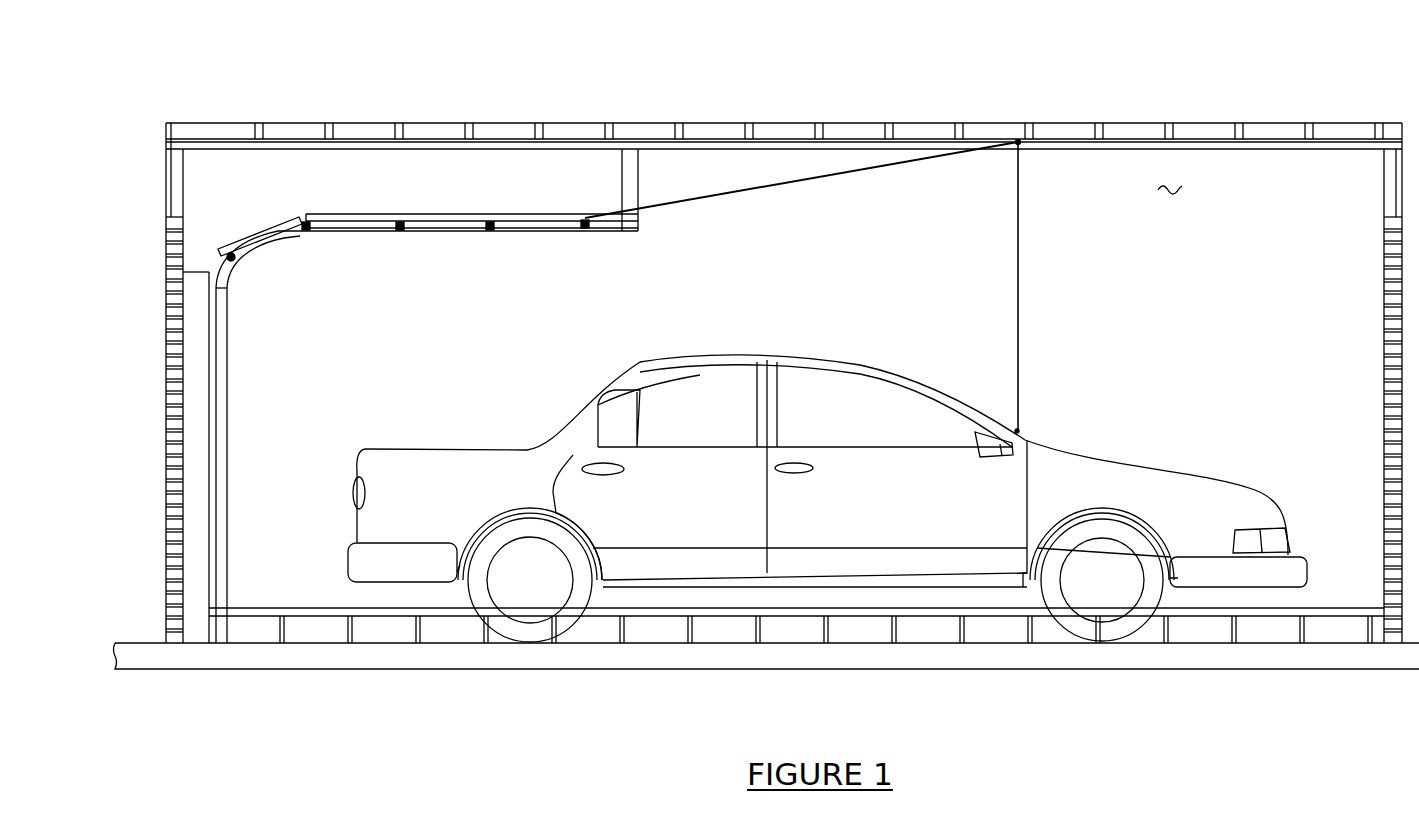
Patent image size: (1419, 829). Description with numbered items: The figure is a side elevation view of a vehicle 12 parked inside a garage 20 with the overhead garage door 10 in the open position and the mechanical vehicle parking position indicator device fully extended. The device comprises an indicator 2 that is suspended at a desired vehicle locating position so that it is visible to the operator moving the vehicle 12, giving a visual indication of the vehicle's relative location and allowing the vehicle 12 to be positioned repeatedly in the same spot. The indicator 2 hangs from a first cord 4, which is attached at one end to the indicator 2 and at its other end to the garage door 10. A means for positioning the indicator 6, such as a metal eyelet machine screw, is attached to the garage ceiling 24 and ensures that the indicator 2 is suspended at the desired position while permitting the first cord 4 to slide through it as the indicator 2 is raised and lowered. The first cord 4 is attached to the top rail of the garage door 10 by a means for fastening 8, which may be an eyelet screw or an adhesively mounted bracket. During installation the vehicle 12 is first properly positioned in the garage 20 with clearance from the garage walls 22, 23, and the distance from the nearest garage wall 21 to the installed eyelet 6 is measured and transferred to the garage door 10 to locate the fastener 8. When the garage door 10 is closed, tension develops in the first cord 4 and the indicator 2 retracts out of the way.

The indicator 2 is at (1016, 430).
The first cord 4 is at (1021, 292).
The means for positioning the indicator 6 is at (1013, 150).
The means for fastening 8 is at (586, 222).
The garage door 10 is at (292, 215).
The vehicle 12 is at (1195, 470).
The garage 20 is at (784, 383).
The garage wall 21 is at (1383, 378).
The garage walls 22 is at (784, 117).
The ceiling 23 is at (1165, 185).
The garage ceiling 24 is at (1275, 122).